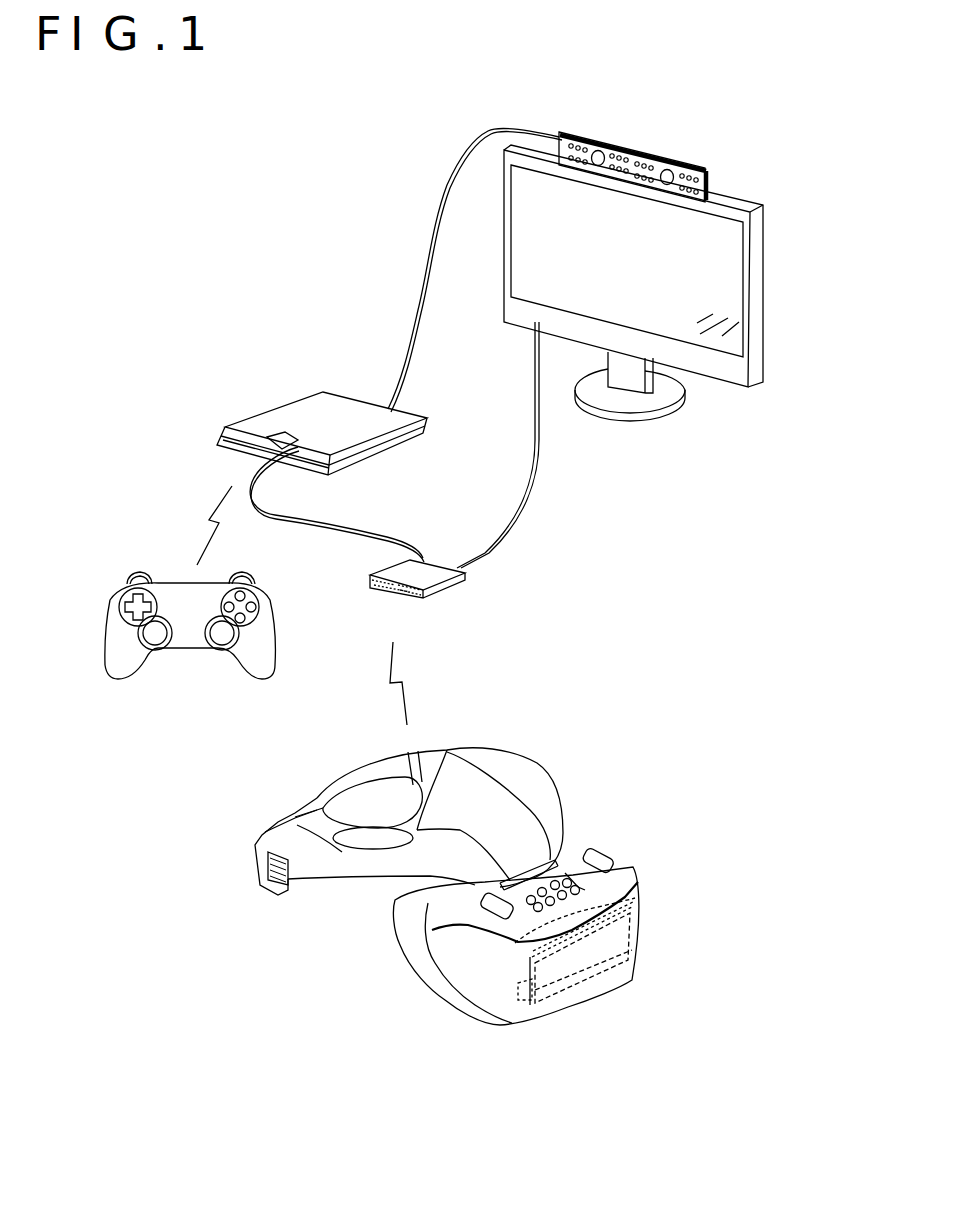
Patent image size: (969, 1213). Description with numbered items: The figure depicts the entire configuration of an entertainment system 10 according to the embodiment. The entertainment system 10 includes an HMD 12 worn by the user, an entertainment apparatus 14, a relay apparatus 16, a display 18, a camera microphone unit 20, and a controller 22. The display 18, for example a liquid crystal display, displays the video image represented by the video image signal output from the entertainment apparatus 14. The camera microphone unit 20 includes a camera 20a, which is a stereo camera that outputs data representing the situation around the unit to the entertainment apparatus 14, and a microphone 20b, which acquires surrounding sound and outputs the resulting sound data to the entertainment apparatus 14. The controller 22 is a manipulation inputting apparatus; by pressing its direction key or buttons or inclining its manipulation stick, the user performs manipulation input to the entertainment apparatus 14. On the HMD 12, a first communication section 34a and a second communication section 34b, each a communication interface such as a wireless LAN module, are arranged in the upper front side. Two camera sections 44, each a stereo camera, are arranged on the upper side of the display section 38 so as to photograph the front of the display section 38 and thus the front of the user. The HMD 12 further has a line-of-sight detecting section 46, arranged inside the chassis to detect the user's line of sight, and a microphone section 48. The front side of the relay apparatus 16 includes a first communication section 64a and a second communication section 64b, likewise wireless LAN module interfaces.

The entertainment system 10 is at (526, 916).
The HMD 12 is at (475, 1017).
The entertainment apparatus 14 is at (275, 410).
The relay apparatus 16 is at (433, 605).
The display 18 is at (762, 298).
The camera microphone unit 20 is at (660, 161).
The camera 20a is at (597, 166).
The microphone 20b is at (623, 147).
The controller 22 is at (274, 635).
The first communication section 34a is at (515, 943).
The second communication section 34b is at (620, 900).
The display section 38 is at (585, 983).
The camera section 44 is at (493, 897).
The line-of-sight detecting section 46 is at (645, 923).
The microphone section 48 is at (570, 880).
The first communication section 64a is at (385, 592).
The second communication section 64b is at (408, 598).